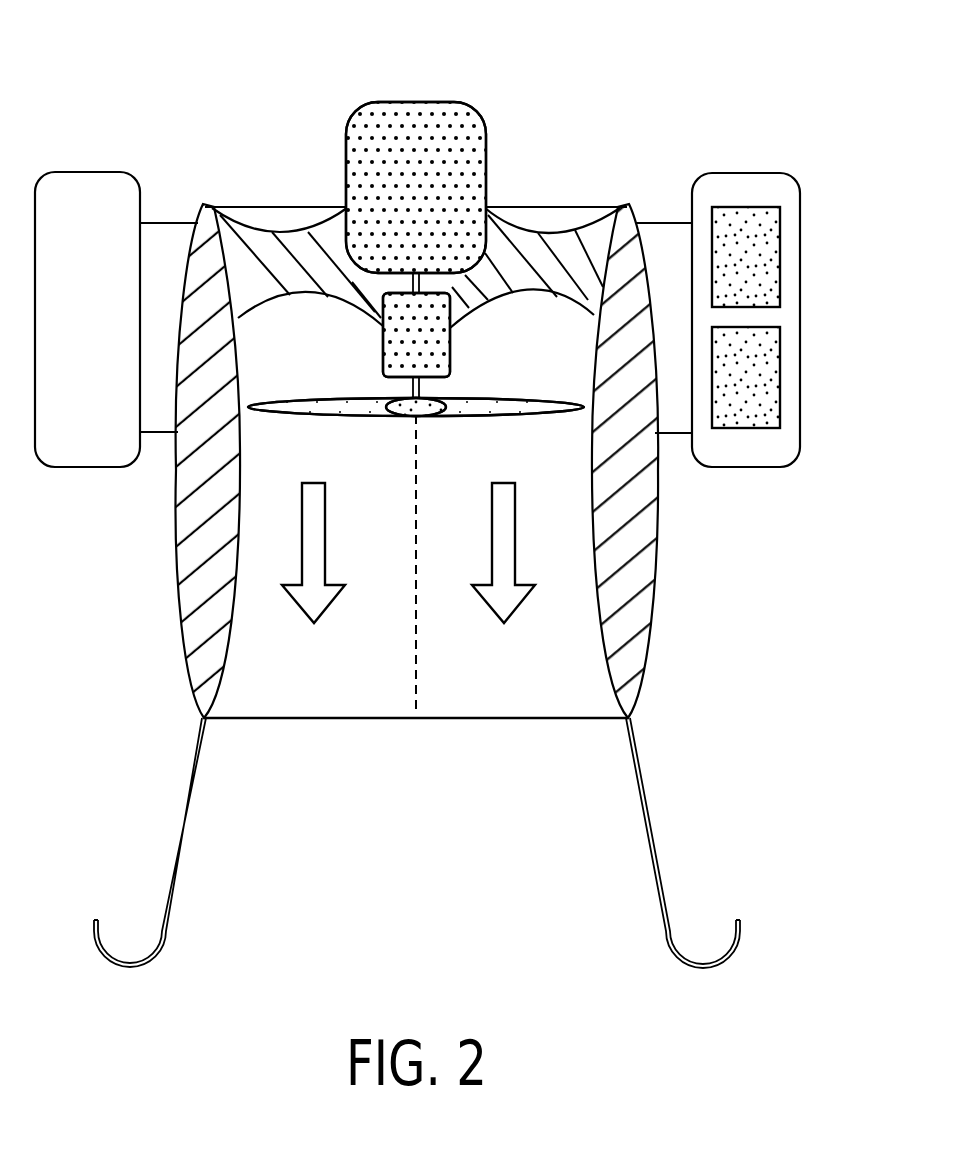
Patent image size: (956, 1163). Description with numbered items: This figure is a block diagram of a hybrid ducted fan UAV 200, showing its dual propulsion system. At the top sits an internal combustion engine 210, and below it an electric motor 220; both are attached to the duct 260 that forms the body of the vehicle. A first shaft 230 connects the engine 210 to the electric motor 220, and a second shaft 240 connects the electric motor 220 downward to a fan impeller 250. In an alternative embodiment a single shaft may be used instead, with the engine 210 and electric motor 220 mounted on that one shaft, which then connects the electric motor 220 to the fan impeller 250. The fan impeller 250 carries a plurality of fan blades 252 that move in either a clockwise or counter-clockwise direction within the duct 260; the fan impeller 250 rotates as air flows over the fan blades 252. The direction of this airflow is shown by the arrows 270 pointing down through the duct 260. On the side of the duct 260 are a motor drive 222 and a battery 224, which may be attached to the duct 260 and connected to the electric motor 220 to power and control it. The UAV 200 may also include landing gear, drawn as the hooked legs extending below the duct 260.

The hybrid ducted fan UAV 200 is at (141, 110).
The internal combustion engine 210 is at (444, 118).
The electric motor 220 is at (400, 310).
The motor drive 222 is at (763, 260).
The battery 224 is at (765, 368).
The first shaft 230 is at (416, 282).
The second shaft 240 is at (416, 387).
The fan impeller 250 is at (427, 417).
The fan blades 252 is at (322, 416).
The duct 260 is at (207, 602).
The arrows 270 is at (320, 595).